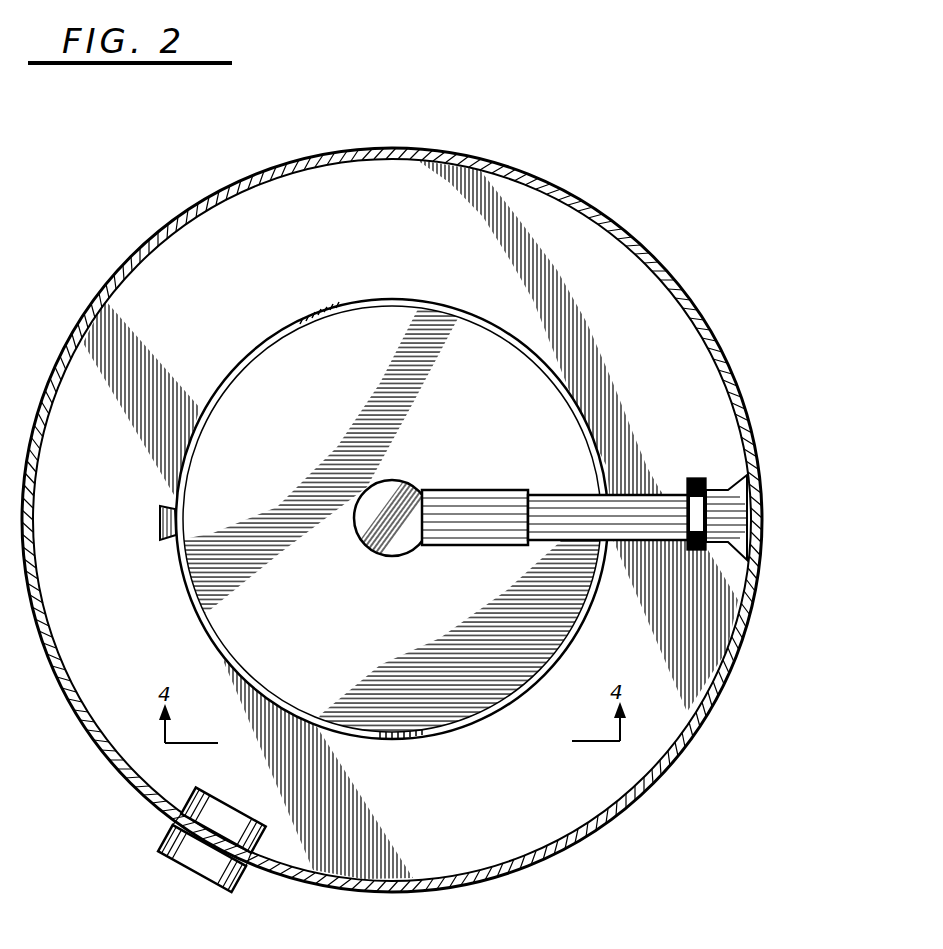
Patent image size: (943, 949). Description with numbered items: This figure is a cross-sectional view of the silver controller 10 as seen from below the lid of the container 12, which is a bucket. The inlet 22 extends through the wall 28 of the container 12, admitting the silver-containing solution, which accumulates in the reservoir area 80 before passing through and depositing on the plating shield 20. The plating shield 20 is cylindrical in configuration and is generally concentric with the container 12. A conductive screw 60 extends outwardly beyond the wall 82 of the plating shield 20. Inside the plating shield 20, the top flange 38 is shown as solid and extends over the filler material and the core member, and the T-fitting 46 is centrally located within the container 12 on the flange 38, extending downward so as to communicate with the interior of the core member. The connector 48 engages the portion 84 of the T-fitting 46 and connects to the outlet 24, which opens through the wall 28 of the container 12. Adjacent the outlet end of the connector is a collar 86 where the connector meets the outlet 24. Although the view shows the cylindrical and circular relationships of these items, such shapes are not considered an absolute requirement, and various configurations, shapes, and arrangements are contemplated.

The silver controller 10 is at (618, 214).
The container 12 is at (603, 826).
The plating shield 20 is at (335, 302).
The inlet 22 is at (180, 838).
The outlet 24 is at (745, 520).
The wall 28 is at (455, 886).
The top flange 38 is at (403, 609).
The T-fitting 46 is at (400, 490).
The connector 48 is at (620, 497).
The conductive screw 60 is at (158, 522).
The reservoir area 80 is at (403, 236).
The wall 82 is at (270, 333).
The portion 84 is at (485, 494).
The collar 86 is at (700, 505).